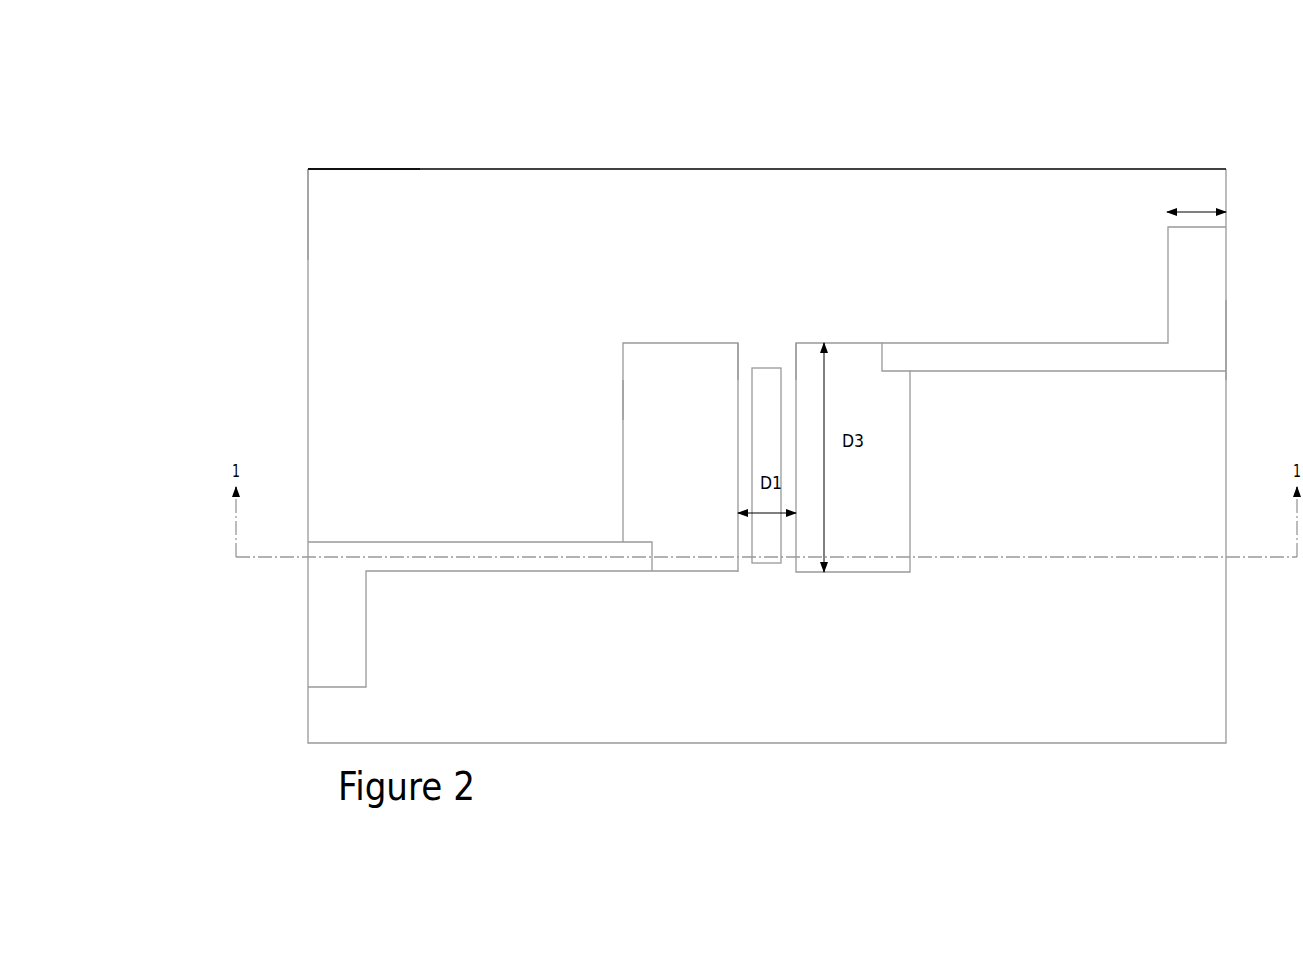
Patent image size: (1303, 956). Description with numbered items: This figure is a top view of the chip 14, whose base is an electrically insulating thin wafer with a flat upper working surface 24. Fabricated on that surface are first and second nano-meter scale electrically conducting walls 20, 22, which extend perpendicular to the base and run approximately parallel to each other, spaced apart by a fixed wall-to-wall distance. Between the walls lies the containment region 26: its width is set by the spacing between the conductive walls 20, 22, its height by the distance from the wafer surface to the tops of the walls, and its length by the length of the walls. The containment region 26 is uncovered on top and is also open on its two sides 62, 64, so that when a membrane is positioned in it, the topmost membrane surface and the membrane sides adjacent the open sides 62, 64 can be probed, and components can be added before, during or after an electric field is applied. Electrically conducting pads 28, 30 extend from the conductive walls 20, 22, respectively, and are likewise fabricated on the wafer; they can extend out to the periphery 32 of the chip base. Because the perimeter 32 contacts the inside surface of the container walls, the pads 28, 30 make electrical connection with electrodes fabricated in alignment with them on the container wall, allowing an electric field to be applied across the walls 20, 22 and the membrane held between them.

The chip 14 is at (1278, 351).
The first electrically conducting wall 20 is at (638, 398).
The second electrically conducting wall 22 is at (895, 457).
The working surface 24 is at (995, 228).
The containment region 26 is at (748, 412).
The electrically conducting pad 28 is at (478, 557).
The electrically conducting pad 30 is at (1024, 356).
The periphery of the wafer 32 is at (305, 232).
The open side of the containment region 62 is at (767, 334).
The open side of the containment region 64 is at (758, 513).